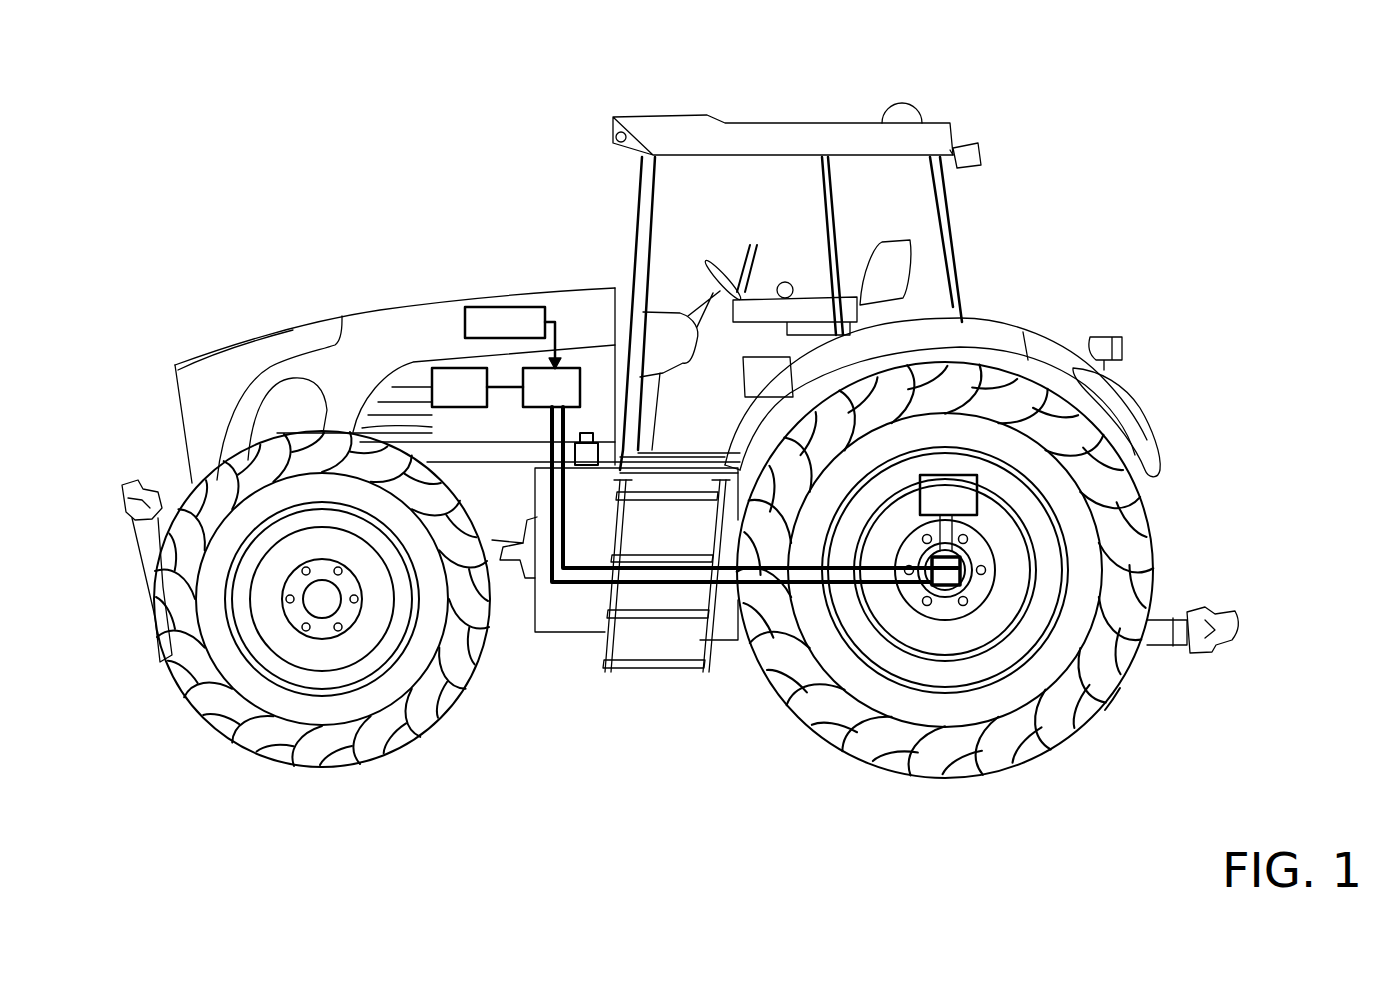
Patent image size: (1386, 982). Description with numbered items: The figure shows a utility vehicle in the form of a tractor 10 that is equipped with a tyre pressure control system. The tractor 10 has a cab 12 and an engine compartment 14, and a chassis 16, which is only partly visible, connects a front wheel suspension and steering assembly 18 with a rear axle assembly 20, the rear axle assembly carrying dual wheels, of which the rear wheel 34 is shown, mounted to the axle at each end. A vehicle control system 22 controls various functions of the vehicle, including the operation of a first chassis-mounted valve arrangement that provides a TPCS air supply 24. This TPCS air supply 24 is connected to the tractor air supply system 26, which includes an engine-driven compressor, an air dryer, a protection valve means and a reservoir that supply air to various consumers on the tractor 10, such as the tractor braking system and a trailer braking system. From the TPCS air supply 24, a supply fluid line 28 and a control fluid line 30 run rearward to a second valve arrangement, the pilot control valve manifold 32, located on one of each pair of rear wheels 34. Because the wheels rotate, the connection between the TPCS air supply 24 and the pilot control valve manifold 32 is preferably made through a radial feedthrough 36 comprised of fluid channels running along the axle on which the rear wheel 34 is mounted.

The tractor 10 is at (318, 191).
The cab 12 is at (790, 140).
The engine compartment 14 is at (308, 363).
The chassis 16 is at (537, 518).
The front wheel suspension and steering assembly 18 is at (311, 775).
The rear axle assembly 20 is at (1003, 757).
The vehicle control system 22 is at (498, 318).
The TPCS air supply 24 is at (562, 383).
The tractor air supply system 26 is at (448, 380).
The supply fluid line 28 is at (568, 585).
The control fluid line 30 is at (598, 593).
The pilot control valve manifold 32 is at (962, 485).
The rear wheel 34 is at (1117, 692).
The radial feedthrough 36 is at (972, 568).